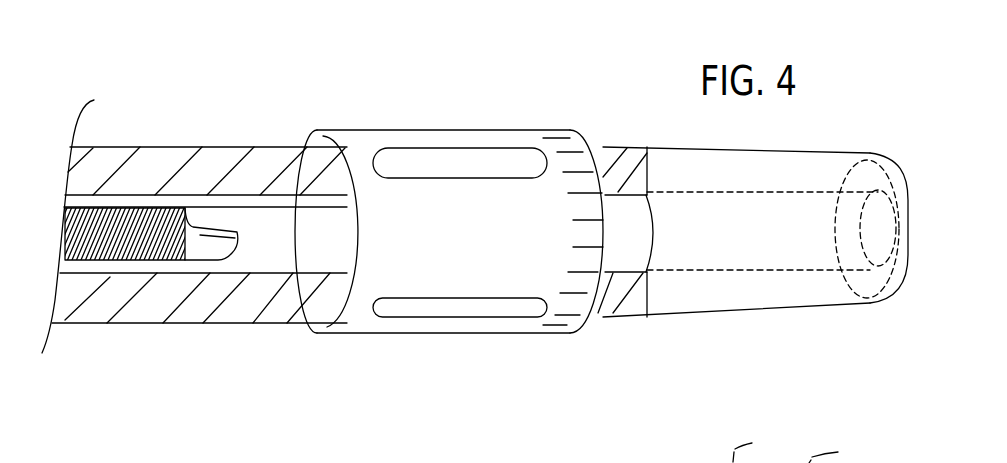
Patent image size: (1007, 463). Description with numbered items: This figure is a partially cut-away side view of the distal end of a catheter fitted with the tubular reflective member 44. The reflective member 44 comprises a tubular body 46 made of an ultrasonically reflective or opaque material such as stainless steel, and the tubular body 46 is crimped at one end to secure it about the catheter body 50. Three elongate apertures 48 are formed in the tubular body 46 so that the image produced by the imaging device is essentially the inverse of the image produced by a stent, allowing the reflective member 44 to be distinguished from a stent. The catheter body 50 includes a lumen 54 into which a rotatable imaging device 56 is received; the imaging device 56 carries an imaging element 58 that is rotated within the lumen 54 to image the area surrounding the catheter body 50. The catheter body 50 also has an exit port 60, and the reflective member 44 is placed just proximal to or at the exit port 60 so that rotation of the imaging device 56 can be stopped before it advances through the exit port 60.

The tubular reflective member 44 is at (465, 248).
The tubular body 46 is at (590, 203).
The elongate apertures 48 is at (392, 178).
The catheter body 50 is at (753, 147).
The lumen 54 is at (295, 333).
The rotatable imaging device 56 is at (135, 207).
The imaging element 58 is at (217, 230).
The exit port 60 is at (873, 250).